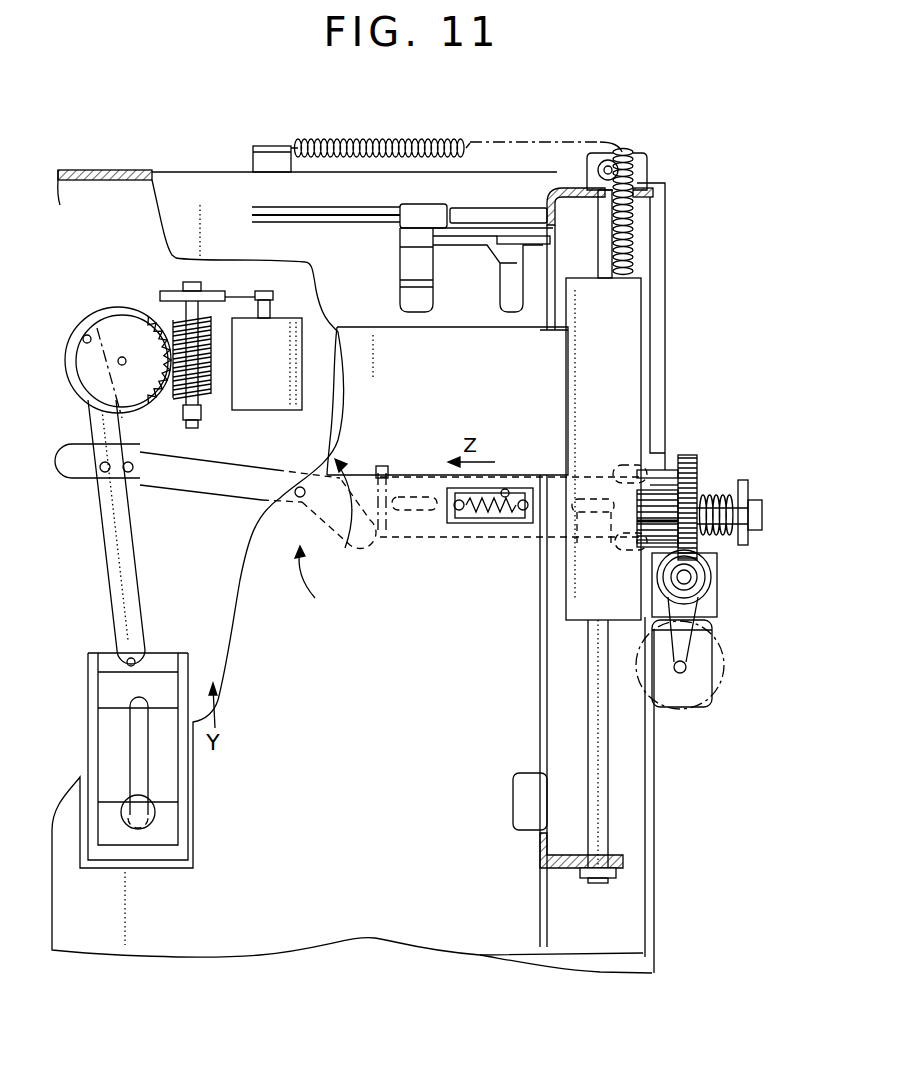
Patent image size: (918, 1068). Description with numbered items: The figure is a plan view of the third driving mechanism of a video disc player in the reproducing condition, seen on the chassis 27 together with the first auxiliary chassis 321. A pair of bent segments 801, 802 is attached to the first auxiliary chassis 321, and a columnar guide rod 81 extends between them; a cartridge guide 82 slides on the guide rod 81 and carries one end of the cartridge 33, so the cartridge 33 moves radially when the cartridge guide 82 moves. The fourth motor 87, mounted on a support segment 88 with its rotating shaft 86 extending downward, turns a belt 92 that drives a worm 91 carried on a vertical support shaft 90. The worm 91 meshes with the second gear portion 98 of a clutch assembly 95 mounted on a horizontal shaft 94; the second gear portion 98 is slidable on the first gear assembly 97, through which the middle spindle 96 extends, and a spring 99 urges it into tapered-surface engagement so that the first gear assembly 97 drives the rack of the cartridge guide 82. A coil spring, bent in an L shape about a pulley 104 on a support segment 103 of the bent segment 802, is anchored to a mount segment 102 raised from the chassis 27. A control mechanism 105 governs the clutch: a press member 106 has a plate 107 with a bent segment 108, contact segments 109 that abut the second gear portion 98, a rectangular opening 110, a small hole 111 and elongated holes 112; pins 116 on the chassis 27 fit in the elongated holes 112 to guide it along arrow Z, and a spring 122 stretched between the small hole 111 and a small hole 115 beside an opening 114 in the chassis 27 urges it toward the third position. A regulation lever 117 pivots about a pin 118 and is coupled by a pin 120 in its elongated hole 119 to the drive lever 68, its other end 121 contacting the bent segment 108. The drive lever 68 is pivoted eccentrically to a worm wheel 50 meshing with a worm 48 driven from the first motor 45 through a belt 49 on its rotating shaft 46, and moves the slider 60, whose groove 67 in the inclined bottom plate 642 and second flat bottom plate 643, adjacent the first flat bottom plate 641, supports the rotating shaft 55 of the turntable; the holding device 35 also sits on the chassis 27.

The chassis 27 is at (370, 938).
The cartridge 33 is at (447, 336).
The holding device 35 is at (490, 203).
The first motor 45 is at (272, 410).
The rotating shaft 46 is at (270, 308).
The worm 48 is at (206, 400).
The belt 49 is at (226, 296).
The worm wheel 50 is at (128, 310).
The rotating shaft 55 is at (150, 826).
The slider 60 is at (160, 650).
The groove 67 is at (144, 770).
The drive lever 68 is at (130, 516).
The guide rod 81 is at (600, 205).
The cartridge guide 82 is at (642, 322).
The rotating shaft 86 is at (688, 672).
The fourth motor 87 is at (724, 655).
The support segment 88 is at (690, 707).
The support shaft 90 is at (700, 598).
The worm 91 is at (692, 577).
The belt 92 is at (712, 625).
The shaft 94 is at (755, 531).
The clutch assembly 95 is at (712, 430).
The middle spindle 96 is at (748, 488).
The first gear assembly 97 is at (648, 490).
The second gear portion 98 is at (695, 468).
The spring 99 is at (730, 495).
The mount segment 102 is at (253, 160).
The support segment 103 is at (648, 163).
The pulley 104 is at (596, 168).
The control mechanism 105 is at (312, 585).
The press member 106 is at (426, 540).
The plate 107 is at (532, 540).
The bent segment 108 is at (385, 545).
The contact segments 109 is at (655, 468).
The rectangular opening 110 is at (386, 140).
The small hole 111 is at (548, 477).
The elongated holes 112 is at (410, 494).
The opening 114 is at (505, 489).
The small hole 115 is at (457, 512).
The pins 116 is at (418, 512).
The regulation lever 117 is at (213, 492).
The pin 118 is at (298, 498).
The elongated hole 119 is at (130, 464).
The pin 120 is at (103, 473).
The other end 121 is at (340, 520).
The spring 122 is at (478, 525).
The first auxiliary chassis 321 is at (540, 745).
The first flat bottom plate 641 is at (108, 808).
The inclined bottom plate 642 is at (110, 720).
The second flat bottom plate 643 is at (104, 672).
The bent segment 801 is at (575, 868).
The bent segment 802 is at (642, 195).